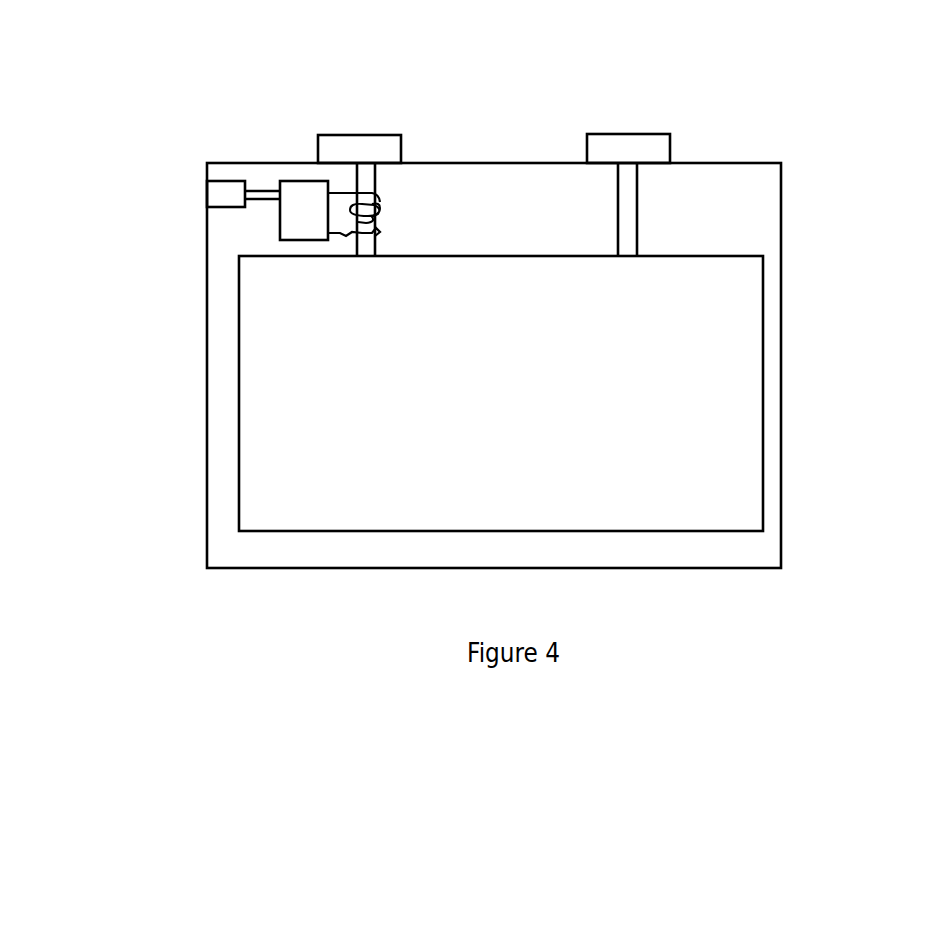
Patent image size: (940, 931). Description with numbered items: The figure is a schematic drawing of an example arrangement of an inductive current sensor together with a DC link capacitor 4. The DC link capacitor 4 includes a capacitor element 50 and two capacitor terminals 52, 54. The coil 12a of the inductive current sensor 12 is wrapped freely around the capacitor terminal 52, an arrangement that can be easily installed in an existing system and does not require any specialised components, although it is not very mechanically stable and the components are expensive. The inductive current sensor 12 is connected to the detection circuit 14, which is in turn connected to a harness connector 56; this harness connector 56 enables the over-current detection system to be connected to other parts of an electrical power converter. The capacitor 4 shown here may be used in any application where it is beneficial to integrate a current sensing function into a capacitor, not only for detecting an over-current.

The DC link capacitor 4 is at (804, 297).
The capacitor element 50 is at (760, 462).
The capacitor terminal 52 is at (357, 133).
The capacitor terminal 54 is at (633, 132).
The harness connector 56 is at (223, 181).
The detection circuit 14 is at (278, 221).
The inductive current sensor 12 is at (332, 176).
The coil 12a is at (380, 197).